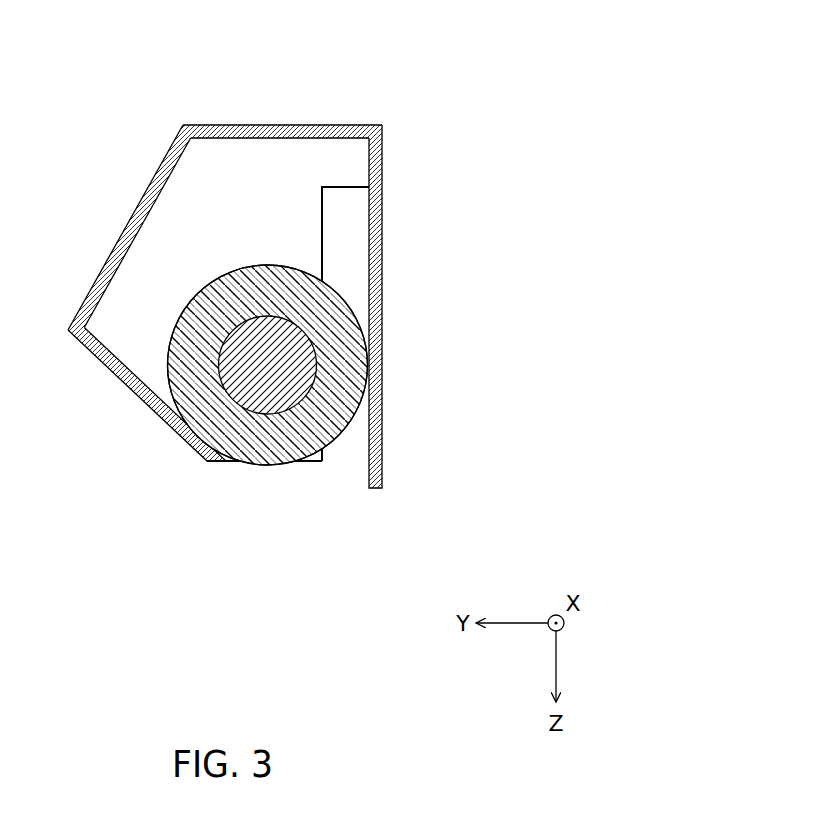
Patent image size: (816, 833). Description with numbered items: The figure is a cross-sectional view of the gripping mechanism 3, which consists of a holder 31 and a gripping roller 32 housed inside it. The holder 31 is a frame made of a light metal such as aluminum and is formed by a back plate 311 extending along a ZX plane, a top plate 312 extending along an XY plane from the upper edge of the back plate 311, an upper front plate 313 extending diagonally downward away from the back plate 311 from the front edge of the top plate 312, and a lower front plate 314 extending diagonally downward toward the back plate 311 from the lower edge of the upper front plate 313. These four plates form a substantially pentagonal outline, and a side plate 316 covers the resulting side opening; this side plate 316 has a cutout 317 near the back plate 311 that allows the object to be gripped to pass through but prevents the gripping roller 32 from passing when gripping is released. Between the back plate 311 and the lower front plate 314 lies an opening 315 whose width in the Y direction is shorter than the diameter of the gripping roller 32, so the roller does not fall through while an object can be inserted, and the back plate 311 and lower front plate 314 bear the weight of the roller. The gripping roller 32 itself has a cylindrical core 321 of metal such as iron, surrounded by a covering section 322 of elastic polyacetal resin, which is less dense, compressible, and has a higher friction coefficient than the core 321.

The gripping mechanism 3 is at (445, 82).
The holder 31 is at (260, 273).
The back plate 311 is at (380, 263).
The top plate 312 is at (292, 125).
The upper front plate 313 is at (130, 222).
The lower front plate 314 is at (117, 375).
The opening 315 is at (320, 472).
The side plate 316 is at (220, 165).
The cutout 317 is at (357, 202).
The gripping roller 32 is at (242, 473).
The core 321 is at (268, 367).
The covering section 322 is at (237, 300).